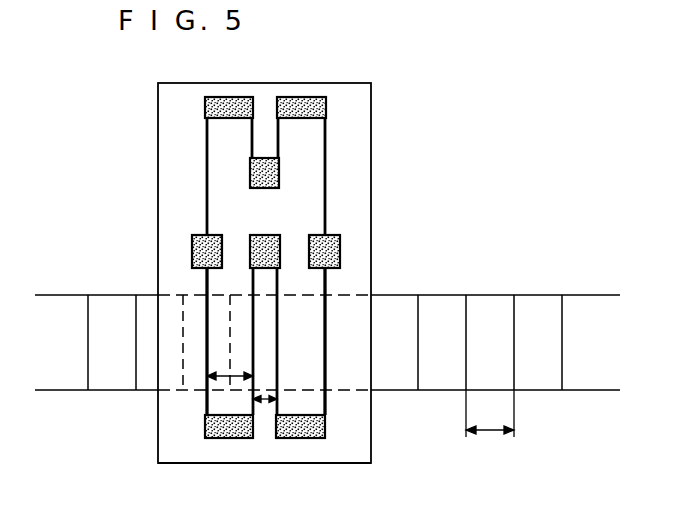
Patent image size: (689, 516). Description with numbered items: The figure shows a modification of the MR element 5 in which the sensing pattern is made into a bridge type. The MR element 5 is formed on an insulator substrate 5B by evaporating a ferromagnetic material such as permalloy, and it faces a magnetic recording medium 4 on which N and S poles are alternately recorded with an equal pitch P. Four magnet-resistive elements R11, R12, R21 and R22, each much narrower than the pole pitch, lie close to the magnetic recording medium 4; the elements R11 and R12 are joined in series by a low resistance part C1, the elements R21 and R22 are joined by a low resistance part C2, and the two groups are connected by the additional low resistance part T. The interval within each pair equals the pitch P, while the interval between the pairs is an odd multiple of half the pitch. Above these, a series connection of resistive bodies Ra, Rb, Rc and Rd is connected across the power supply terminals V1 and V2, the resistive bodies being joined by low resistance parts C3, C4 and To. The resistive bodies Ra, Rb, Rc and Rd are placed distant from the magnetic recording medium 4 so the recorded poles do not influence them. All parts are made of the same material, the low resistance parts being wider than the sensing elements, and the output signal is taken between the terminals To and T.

The MR element 5 is at (365, 245).
The insulator substrate 5B is at (371, 135).
The magnetic recording medium 4 is at (100, 300).
The pitch P is at (360, 394).
The resistive body Ra is at (207, 163).
The resistive body Rb is at (326, 160).
The resistive body Rc is at (252, 135).
The resistive body Rd is at (279, 126).
The magnet-resistive element R11 is at (207, 404).
The magnet-resistive element R12 is at (253, 404).
The magnet-resistive element R21 is at (278, 410).
The magnet-resistive element R22 is at (325, 403).
The low resistance part C1 is at (219, 439).
The low resistance part C2 is at (325, 426).
The low resistance part C3 is at (232, 97).
The low resistance part C4 is at (302, 97).
The power supply terminal V1 is at (201, 236).
The power supply terminal V2 is at (330, 236).
The connection part T is at (256, 236).
The terminal To is at (275, 189).